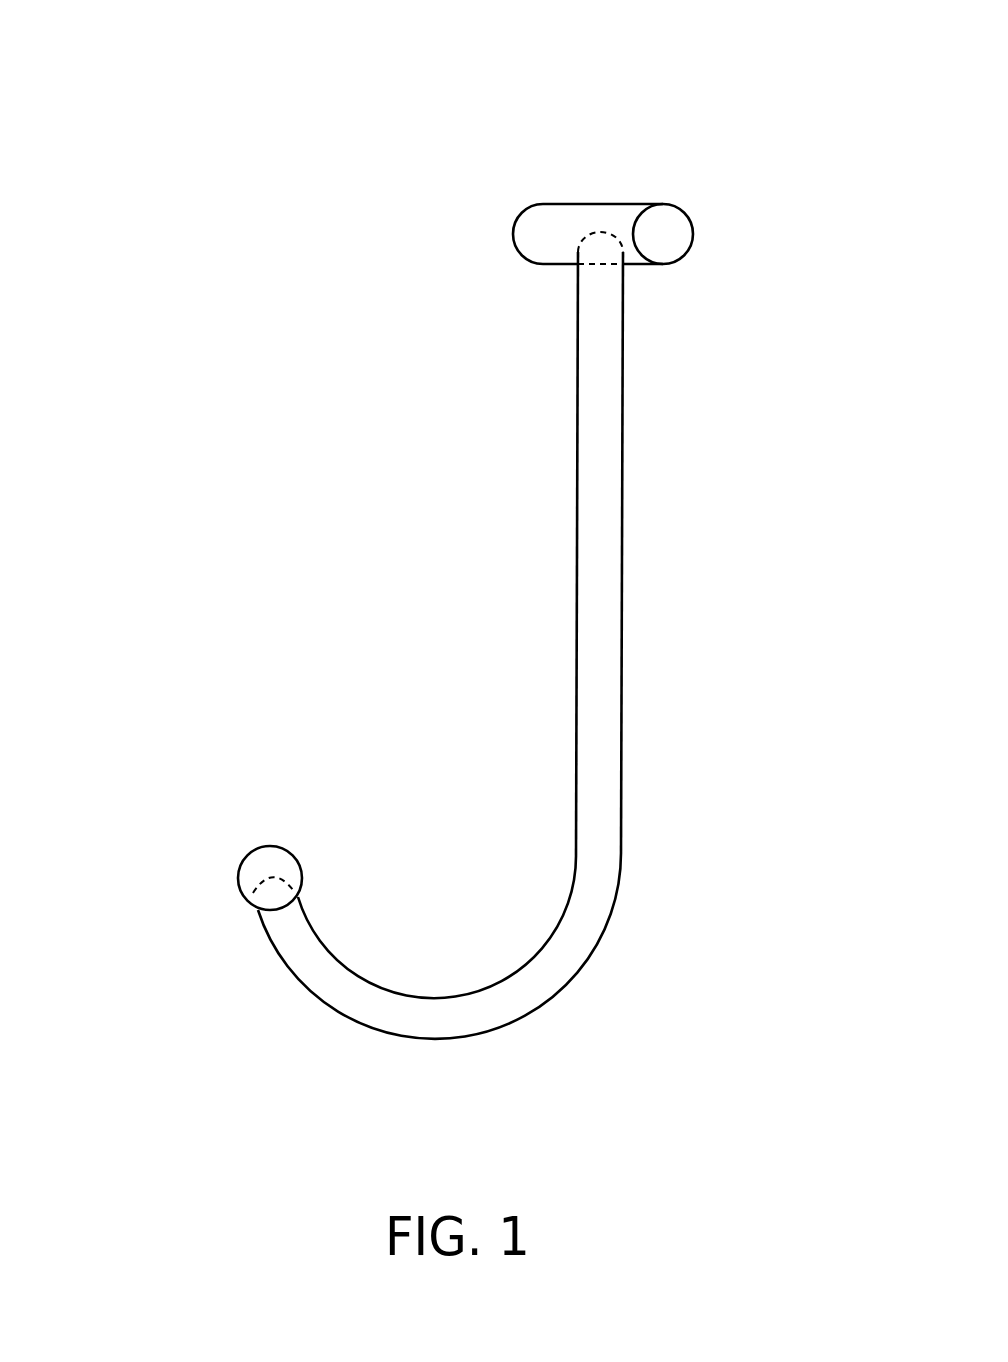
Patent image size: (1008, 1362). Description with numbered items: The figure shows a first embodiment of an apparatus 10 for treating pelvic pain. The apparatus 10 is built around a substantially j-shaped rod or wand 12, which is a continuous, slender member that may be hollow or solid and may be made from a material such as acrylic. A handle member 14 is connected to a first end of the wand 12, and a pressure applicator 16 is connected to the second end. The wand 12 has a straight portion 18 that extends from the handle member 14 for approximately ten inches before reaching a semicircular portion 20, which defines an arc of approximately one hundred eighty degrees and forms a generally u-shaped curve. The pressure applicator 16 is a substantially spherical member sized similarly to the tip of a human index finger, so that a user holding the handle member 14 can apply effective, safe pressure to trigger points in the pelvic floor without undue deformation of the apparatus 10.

The apparatus 10 is at (378, 138).
The wand 12 is at (577, 553).
The handle member 14 is at (695, 233).
The pressure applicator 16 is at (237, 875).
The straight portion 18 is at (623, 358).
The semicircular portion 20 is at (560, 985).